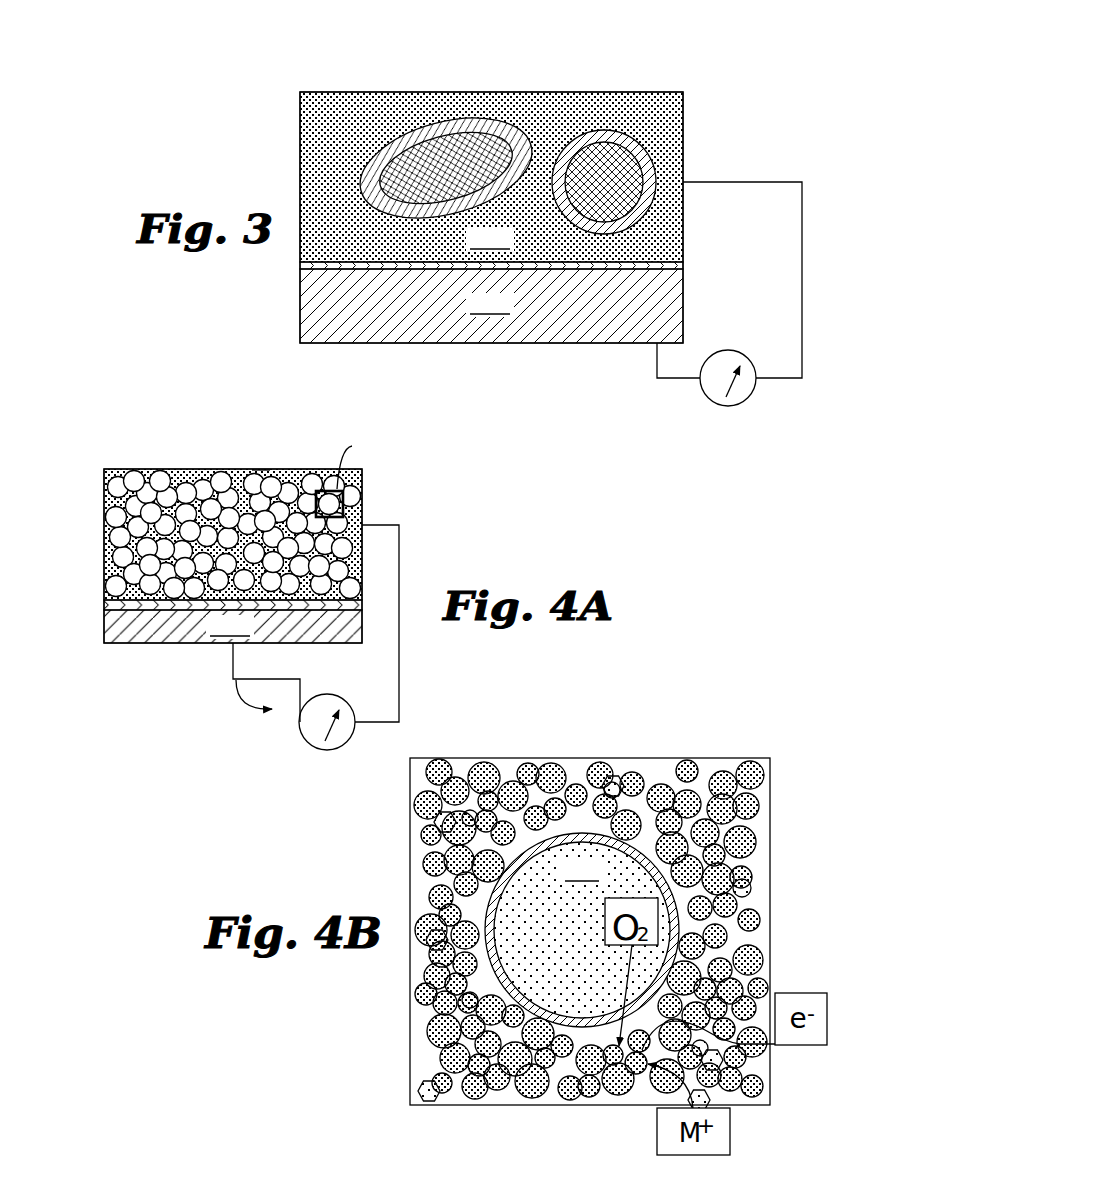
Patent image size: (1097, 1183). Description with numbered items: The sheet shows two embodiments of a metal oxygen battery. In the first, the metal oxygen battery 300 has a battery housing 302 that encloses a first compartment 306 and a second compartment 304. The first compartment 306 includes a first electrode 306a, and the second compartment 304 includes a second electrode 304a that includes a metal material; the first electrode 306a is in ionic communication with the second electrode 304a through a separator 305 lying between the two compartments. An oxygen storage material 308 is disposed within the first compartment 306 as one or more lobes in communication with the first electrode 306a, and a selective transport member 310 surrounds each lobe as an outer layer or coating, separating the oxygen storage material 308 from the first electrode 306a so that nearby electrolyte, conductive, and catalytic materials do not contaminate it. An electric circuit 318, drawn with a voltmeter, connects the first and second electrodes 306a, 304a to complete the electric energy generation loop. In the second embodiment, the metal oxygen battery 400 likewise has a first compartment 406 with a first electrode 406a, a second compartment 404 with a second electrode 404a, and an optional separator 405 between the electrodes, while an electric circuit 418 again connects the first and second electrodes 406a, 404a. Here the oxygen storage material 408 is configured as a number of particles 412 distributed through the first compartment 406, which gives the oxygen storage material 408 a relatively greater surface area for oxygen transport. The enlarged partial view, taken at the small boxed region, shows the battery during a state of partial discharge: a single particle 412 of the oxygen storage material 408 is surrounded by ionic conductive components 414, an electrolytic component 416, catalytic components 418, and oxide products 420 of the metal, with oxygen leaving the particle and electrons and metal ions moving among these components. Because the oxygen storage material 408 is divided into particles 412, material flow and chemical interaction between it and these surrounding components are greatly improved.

In FIG. 3, the metal oxygen battery 300 is at (492, 209).
In FIG. 3, the battery housing 302 is at (690, 90).
In FIG. 3, the second compartment 304 is at (532, 285).
In FIG. 3, the second electrode 304a is at (490, 304).
In FIG. 3, the separator 305 is at (300, 265).
In FIG. 3, the first compartment 306 is at (530, 177).
In FIG. 3, the first electrode 306a is at (490, 239).
In FIG. 3, the oxygen storage material 308 is at (446, 163).
In FIG. 3, the selective transport member 310 is at (483, 117).
In FIG. 3, the electric circuit 318 is at (720, 412).
In FIG. 4A, the metal oxygen battery 400 is at (238, 566).
In FIG. 4A, the second compartment 404 is at (202, 604).
In FIG. 4A, the second electrode 404a is at (230, 626).
In FIG. 4A, the separator 405 is at (363, 605).
In FIG. 4A, the first compartment 406 is at (202, 510).
In FIG. 4A, the first electrode 406a is at (260, 466).
In FIG. 4B, the oxygen storage material 408 is at (582, 930).
In FIG. 4A, the particles 412 is at (146, 484).
In FIG. 4B, the particles 412 is at (583, 831).
In FIG. 4B, the ionic conductive components 414 is at (750, 806).
In FIG. 4B, the electrolytic component 416 is at (695, 933).
In FIG. 4A, the electric circuit 418 is at (320, 753).
In FIG. 4B, the electric circuit 418 is at (724, 1061).
In FIG. 4B, the oxide products 420 is at (740, 888).